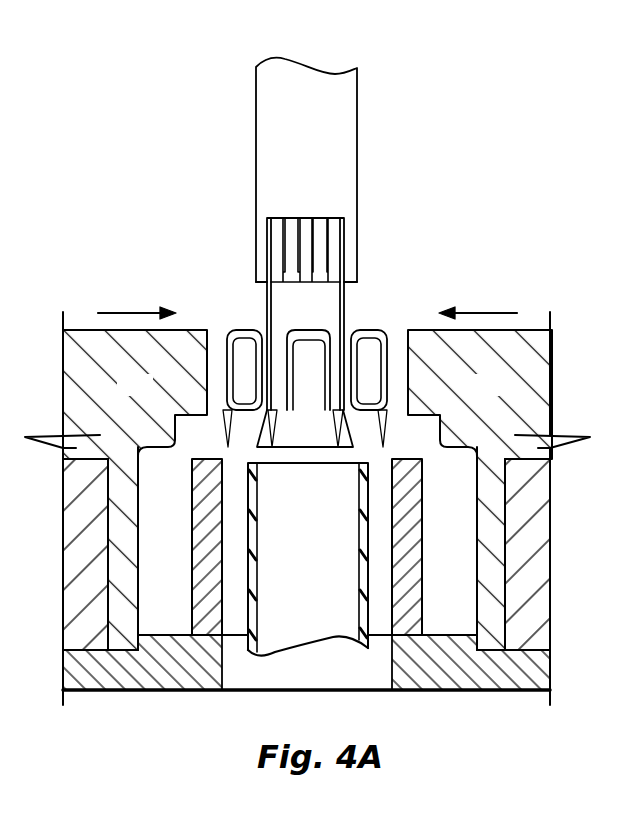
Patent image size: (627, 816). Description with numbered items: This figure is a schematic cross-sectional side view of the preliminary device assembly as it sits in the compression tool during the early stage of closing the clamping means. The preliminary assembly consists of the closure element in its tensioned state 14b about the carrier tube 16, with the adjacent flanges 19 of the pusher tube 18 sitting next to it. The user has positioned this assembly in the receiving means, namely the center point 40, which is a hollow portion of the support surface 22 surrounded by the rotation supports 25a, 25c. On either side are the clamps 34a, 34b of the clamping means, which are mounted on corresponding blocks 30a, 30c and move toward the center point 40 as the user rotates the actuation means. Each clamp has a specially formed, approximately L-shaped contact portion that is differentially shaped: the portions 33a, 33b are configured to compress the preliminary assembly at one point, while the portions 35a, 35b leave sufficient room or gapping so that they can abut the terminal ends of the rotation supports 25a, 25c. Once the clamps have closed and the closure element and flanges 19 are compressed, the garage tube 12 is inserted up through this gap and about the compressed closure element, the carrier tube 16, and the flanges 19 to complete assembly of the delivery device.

The garage tube 12 is at (320, 589).
The tensioned state of closure element 14b is at (372, 348).
The carrier tube 16 is at (273, 308).
The pusher tube 18 is at (340, 137).
The flanges 19 is at (348, 248).
The support surface 22 is at (68, 663).
The rotation support 25a is at (208, 620).
The rotation support 25c is at (405, 620).
The block 30a is at (67, 587).
The block 30c is at (547, 587).
The contact portion 33a is at (217, 338).
The contact portion 33b is at (400, 338).
The clamp 34a is at (135, 490).
The clamp 34b is at (480, 490).
The gap portion of contact portion 35a is at (125, 618).
The gap portion of contact portion 35b is at (488, 618).
The center point 40 is at (390, 268).